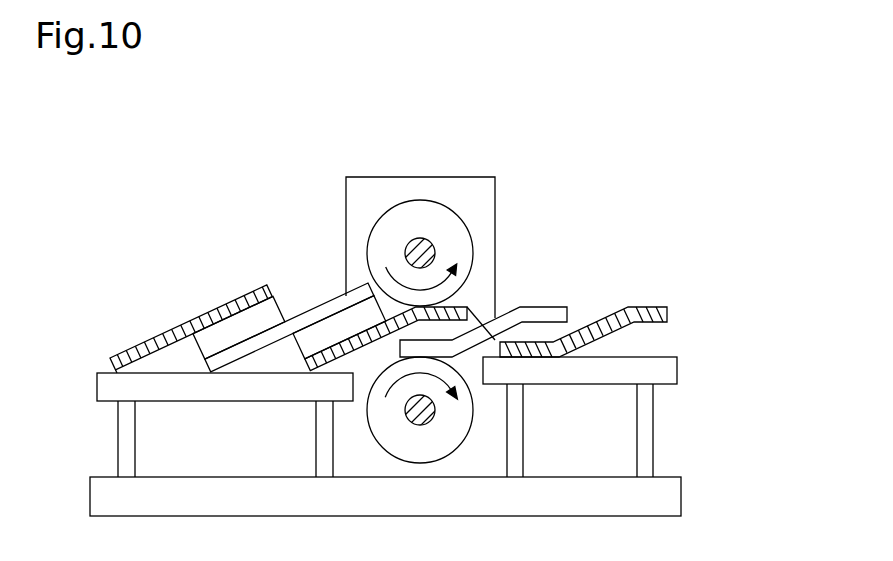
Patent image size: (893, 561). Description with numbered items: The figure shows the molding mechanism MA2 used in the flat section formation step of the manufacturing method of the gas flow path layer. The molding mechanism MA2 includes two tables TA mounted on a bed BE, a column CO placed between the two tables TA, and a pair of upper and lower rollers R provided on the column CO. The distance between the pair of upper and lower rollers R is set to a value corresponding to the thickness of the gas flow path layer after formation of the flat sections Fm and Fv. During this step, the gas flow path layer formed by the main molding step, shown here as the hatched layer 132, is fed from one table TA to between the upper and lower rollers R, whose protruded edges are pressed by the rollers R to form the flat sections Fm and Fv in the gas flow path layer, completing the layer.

The molding mechanism MA2 is at (605, 190).
The column CO is at (483, 193).
The rollers R is at (460, 241).
The flat section Fm is at (558, 307).
The stacked sheet 132 is at (685, 317).
The flat section Fv is at (527, 362).
The tables TA is at (113, 392).
The bed BE is at (672, 498).